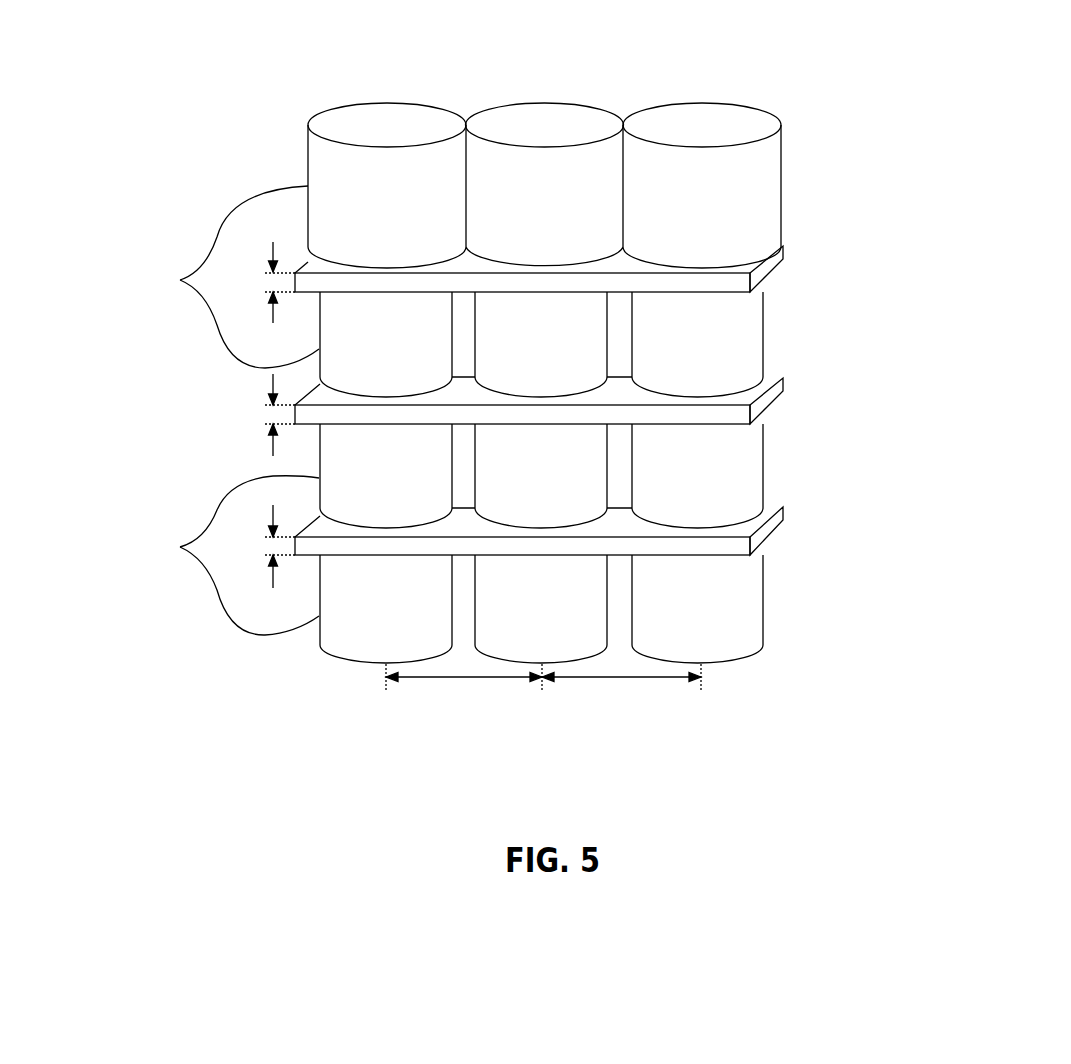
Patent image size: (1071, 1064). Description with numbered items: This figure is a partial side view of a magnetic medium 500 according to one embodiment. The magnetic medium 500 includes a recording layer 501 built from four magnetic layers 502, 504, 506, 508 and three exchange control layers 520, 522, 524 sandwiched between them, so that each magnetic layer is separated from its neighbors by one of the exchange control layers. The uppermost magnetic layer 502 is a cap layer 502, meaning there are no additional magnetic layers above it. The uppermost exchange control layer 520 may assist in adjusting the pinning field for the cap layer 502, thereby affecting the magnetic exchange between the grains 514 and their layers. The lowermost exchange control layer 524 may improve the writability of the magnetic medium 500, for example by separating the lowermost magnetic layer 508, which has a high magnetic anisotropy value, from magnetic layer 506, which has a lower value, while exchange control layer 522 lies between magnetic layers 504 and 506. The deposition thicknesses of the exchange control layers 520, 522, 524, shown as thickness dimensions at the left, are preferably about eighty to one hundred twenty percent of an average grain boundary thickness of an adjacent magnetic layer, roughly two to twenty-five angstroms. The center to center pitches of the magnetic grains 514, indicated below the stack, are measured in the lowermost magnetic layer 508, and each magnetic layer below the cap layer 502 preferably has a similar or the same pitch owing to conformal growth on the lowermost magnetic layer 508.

The magnetic medium 500 is at (790, 85).
The recording layer 501 is at (90, 315).
The cap layer 502 is at (407, 211).
The magnetic layer 504 is at (406, 353).
The magnetic layer 506 is at (406, 488).
The lowermost magnetic layer 508 is at (406, 618).
The magnetic grains 514 is at (226, 410).
The uppermost exchange control layer 520 is at (783, 249).
The exchange control layer 522 is at (783, 380).
The lowermost exchange control layer 524 is at (783, 506).